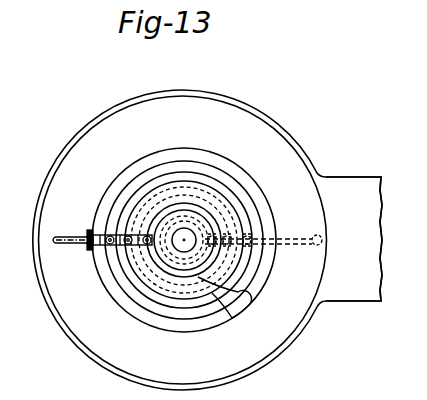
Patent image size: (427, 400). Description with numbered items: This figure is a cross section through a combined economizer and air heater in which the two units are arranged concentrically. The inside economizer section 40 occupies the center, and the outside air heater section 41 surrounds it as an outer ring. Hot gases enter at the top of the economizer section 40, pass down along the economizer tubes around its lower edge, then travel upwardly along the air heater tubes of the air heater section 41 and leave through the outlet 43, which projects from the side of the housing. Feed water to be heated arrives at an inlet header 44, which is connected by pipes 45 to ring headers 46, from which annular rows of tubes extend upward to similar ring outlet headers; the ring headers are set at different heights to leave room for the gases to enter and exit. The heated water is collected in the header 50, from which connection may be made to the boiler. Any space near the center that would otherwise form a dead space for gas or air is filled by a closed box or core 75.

The inside economizer section 40 is at (197, 332).
The outside air heater section 41 is at (287, 348).
The outlet 43 is at (349, 301).
The inlet header 44 is at (326, 238).
The pipes 45 is at (285, 247).
The ring headers 46 is at (236, 307).
The header 50 is at (78, 253).
The closed boxes or cores 75 is at (190, 238).